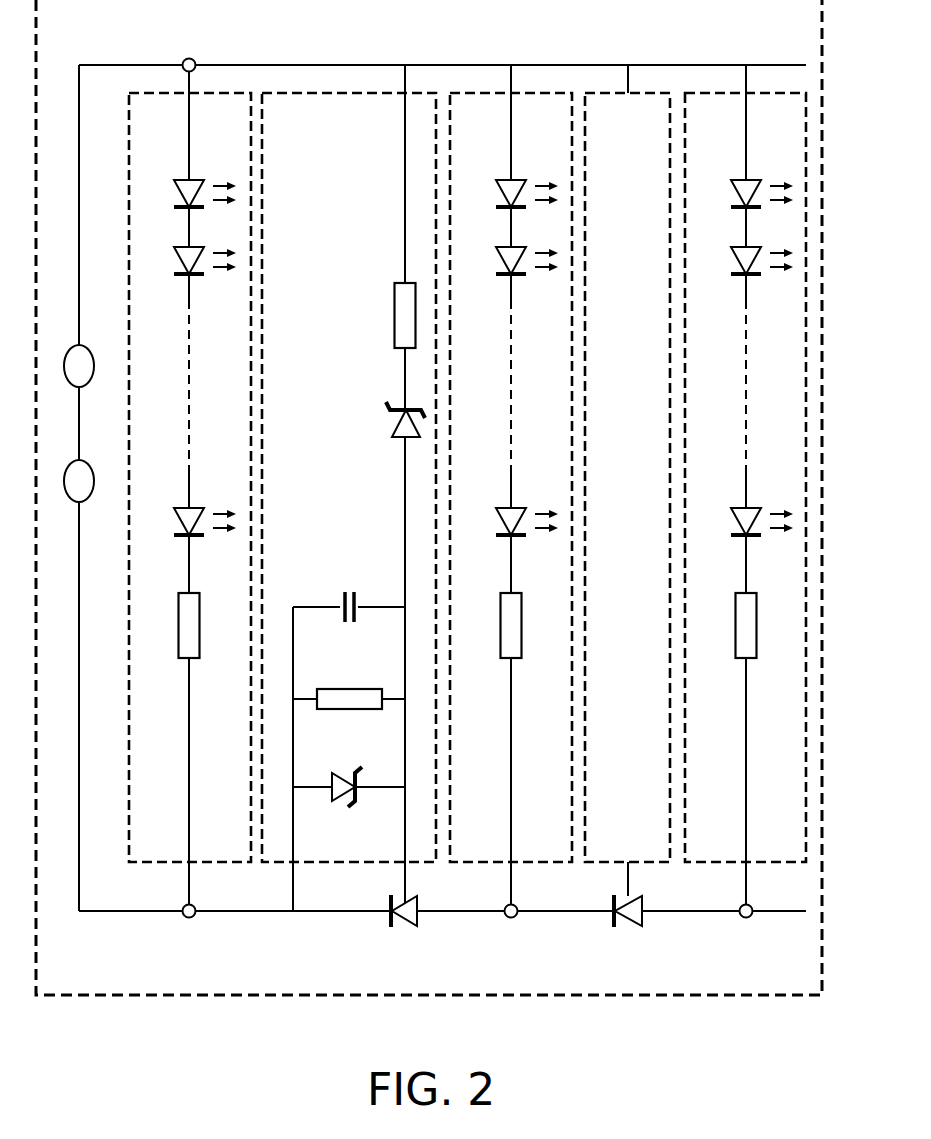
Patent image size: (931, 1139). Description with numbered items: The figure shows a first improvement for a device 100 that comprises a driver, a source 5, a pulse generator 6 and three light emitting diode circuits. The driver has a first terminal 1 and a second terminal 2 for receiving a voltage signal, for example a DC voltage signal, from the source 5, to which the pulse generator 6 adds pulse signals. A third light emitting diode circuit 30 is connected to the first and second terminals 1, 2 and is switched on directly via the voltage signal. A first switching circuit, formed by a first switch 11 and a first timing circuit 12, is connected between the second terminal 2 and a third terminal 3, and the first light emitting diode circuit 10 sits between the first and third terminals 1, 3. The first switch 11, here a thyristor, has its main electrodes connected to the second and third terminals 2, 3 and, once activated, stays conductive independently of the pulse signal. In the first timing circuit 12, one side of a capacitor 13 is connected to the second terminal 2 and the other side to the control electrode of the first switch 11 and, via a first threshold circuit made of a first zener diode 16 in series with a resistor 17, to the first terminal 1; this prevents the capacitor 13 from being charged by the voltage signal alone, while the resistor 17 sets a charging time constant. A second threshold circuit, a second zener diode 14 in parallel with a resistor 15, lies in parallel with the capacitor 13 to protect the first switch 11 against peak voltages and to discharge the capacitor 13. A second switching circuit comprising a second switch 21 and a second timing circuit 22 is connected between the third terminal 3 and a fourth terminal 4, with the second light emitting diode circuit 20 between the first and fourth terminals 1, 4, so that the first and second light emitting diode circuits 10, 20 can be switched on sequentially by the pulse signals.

The device 100 is at (741, 996).
The first terminal 1 is at (184, 61).
The second terminal 2 is at (189, 918).
The third terminal 3 is at (511, 918).
The fourth terminal 4 is at (746, 918).
The source 5 is at (90, 498).
The pulse generator 6 is at (90, 349).
The third light emitting diode circuit 30 is at (222, 93).
The first light emitting diode circuit 10 is at (541, 93).
The second light emitting diode circuit 20 is at (775, 93).
The first timing circuit 12 is at (349, 465).
The second timing circuit 22 is at (655, 93).
The resistor 17 is at (394, 315).
The first zener diode 16 is at (392, 426).
The capacitor 13 is at (349, 591).
The resistor 15 is at (345, 689).
The second zener diode 14 is at (345, 773).
The first switch 11 is at (404, 926).
The second switch 21 is at (627, 926).